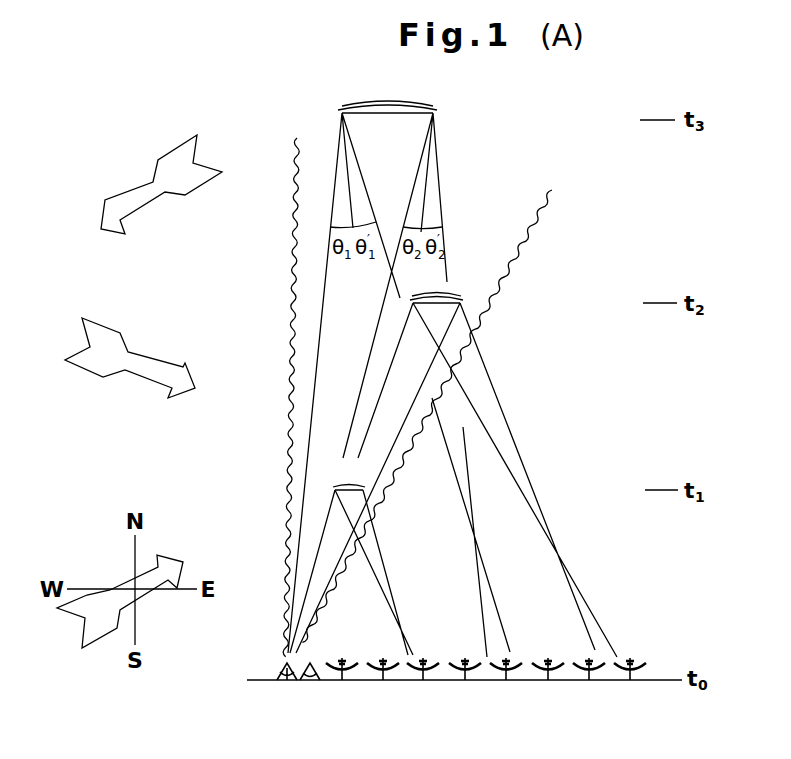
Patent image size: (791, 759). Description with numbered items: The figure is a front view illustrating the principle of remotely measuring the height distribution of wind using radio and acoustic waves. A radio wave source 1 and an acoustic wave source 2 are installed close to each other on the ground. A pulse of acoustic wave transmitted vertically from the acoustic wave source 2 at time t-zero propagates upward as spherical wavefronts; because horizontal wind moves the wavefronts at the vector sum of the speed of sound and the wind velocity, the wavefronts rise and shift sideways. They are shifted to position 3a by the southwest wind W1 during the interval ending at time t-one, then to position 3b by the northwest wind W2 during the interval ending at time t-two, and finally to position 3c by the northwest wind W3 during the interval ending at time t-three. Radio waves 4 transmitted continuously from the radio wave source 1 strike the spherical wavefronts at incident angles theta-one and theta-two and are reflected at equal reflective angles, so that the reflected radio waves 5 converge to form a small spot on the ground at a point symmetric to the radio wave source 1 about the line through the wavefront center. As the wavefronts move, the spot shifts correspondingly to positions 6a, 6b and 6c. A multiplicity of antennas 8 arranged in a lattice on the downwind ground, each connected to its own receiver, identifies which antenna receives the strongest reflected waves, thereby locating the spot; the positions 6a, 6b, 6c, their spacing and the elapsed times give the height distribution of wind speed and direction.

The radio wave source 1 is at (278, 676).
The acoustic wave source 2 is at (318, 676).
The wavefront position at time t1 3a is at (340, 487).
The wavefront position at time t2 3b is at (449, 298).
The wavefront position at time t3 3c is at (362, 108).
The radio waves 4 is at (335, 335).
The reflected radio waves 5 is at (453, 448).
The focusing spot position at time t1 6a is at (411, 650).
The focusing spot position at time t2 6b is at (594, 624).
The focusing spot position at time t3 6c is at (497, 631).
The antennas 8 is at (457, 683).
The southwest wind W1 is at (92, 627).
The northwest wind W2 is at (138, 367).
The northwest wind W3 is at (183, 187).